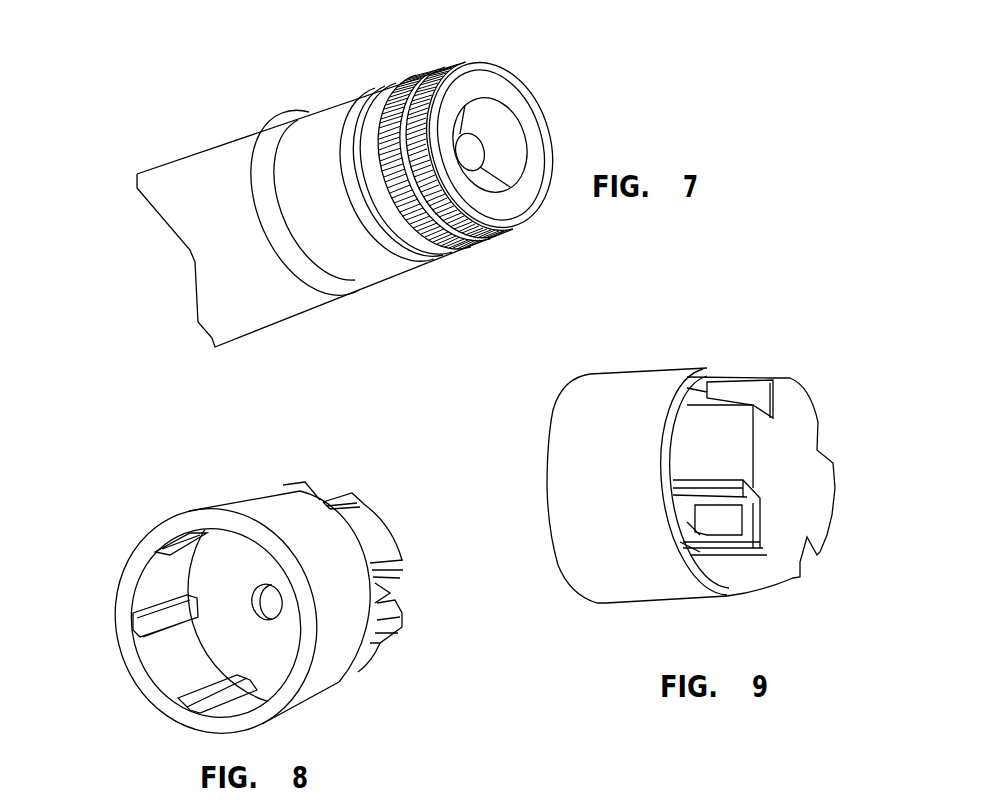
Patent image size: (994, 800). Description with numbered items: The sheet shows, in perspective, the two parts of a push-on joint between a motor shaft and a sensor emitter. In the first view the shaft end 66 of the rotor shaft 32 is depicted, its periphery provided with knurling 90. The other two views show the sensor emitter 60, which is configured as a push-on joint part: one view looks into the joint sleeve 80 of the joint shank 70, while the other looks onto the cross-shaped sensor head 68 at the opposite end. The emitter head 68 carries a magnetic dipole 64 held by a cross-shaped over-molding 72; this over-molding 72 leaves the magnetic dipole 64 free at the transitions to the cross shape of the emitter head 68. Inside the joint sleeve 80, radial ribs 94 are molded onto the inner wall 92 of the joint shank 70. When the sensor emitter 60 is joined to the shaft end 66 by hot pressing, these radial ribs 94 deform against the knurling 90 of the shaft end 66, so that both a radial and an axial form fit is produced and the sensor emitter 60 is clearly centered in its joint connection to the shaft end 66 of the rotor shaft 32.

In FIG. 7, the rotor shaft 32 is at (217, 277).
In FIG. 7, the shaft end 66 is at (338, 123).
In FIG. 7, the knurling 90 is at (408, 102).
In FIG. 8, the sensor emitter 60 is at (233, 576).
In FIG. 9, the sensor emitter 60 is at (671, 455).
In FIG. 9, the magnetic dipole 64 is at (728, 525).
In FIG. 8, the sensor head 68 is at (370, 526).
In FIG. 9, the sensor head 68 is at (797, 412).
In FIG. 8, the joint shank 70 is at (202, 597).
In FIG. 9, the joint shank 70 is at (651, 428).
In FIG. 8, the over-molding 72 is at (233, 597).
In FIG. 9, the over-molding 72 is at (710, 428).
In FIG. 8, the joint sleeve 80 is at (136, 552).
In FIG. 9, the joint sleeve 80 is at (622, 373).
In FIG. 8, the inner wall 92 is at (177, 669).
In FIG. 8, the radial ribs 94 is at (160, 613).